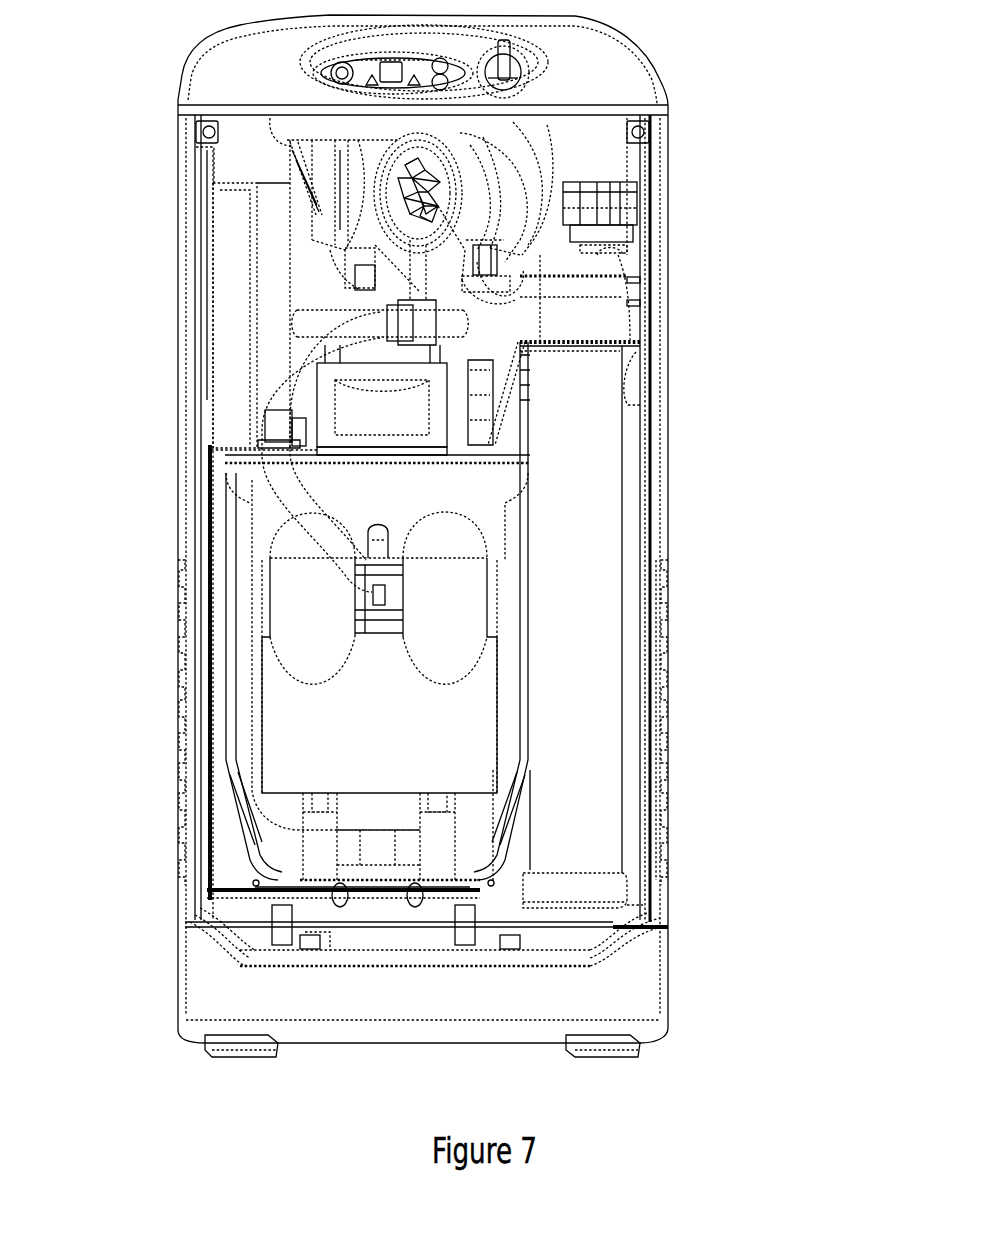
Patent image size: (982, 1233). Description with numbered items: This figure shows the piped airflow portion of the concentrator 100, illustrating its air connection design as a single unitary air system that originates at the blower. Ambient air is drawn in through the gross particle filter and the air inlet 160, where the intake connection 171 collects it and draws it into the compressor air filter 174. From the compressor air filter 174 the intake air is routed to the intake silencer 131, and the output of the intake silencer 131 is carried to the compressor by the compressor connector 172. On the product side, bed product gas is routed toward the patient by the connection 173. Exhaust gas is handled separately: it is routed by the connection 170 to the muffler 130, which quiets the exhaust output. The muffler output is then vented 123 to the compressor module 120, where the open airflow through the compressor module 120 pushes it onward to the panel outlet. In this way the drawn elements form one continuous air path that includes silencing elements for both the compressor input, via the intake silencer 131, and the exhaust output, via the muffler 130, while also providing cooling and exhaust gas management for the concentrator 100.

The concentrator 100 is at (228, 507).
The compressor module 120 is at (180, 690).
The muffler output vent 123 is at (292, 447).
The muffler 130 is at (248, 162).
The intake silencer 131 is at (225, 352).
The air inlet 160 is at (663, 640).
The exhaust connection 170 is at (500, 145).
The intake connection 171 is at (470, 278).
The compressor connector 172 is at (265, 837).
The product gas connection 173 is at (455, 243).
The compressor air filter 174 is at (497, 185).